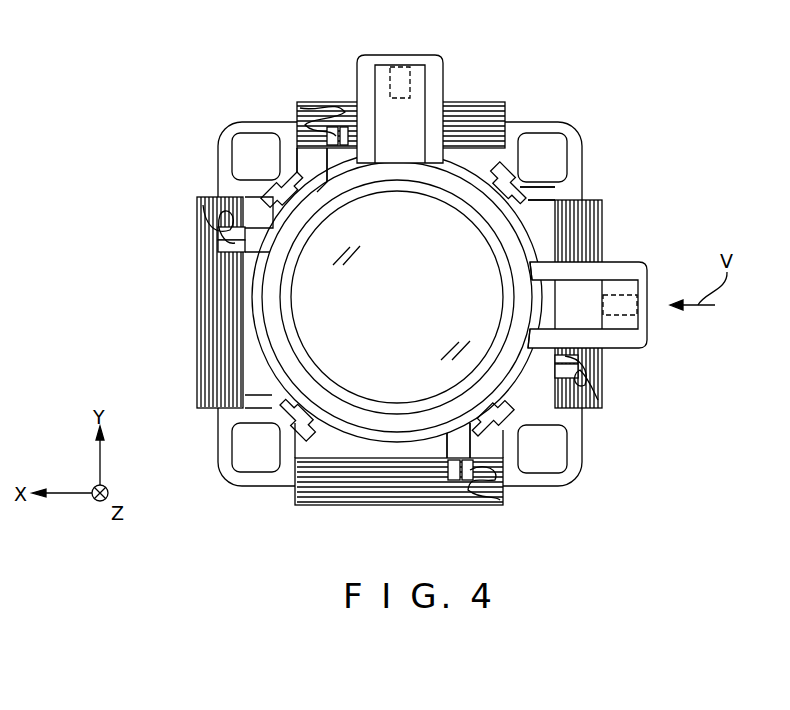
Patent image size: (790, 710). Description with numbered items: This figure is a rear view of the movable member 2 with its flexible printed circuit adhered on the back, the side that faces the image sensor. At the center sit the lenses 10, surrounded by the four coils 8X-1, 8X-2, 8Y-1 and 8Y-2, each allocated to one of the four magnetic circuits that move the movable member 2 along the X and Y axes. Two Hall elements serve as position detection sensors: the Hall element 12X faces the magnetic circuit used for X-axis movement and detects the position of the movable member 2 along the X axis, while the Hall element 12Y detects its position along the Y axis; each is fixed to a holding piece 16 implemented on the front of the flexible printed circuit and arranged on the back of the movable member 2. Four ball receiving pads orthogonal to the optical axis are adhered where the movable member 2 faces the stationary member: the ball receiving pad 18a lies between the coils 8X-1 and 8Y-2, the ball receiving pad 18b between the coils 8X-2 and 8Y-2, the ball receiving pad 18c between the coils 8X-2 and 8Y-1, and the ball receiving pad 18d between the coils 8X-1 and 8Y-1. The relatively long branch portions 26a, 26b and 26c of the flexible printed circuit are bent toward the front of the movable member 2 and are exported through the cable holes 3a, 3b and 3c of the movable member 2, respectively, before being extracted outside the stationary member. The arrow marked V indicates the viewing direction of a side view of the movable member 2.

The movable member 2 is at (541, 488).
The cable hole 3a is at (518, 435).
The cable hole 3b is at (296, 165).
The cable hole 3c is at (528, 203).
The coil 8X-1 is at (602, 215).
The coil 8X-2 is at (197, 322).
The coil 8Y-1 is at (388, 505).
The coil 8Y-2 is at (468, 102).
The lenses 10 is at (348, 378).
The Hall element 12X is at (637, 312).
The Hall element 12Y is at (400, 78).
The holding piece 16 is at (435, 57).
The ball receiving pad 18a is at (555, 153).
The ball receiving pad 18b is at (252, 157).
The ball receiving pad 18c is at (253, 455).
The ball receiving pad 18d is at (550, 455).
The branch portion 26a is at (523, 432).
The branch portion 26b is at (278, 193).
The branch portion 26c is at (518, 187).